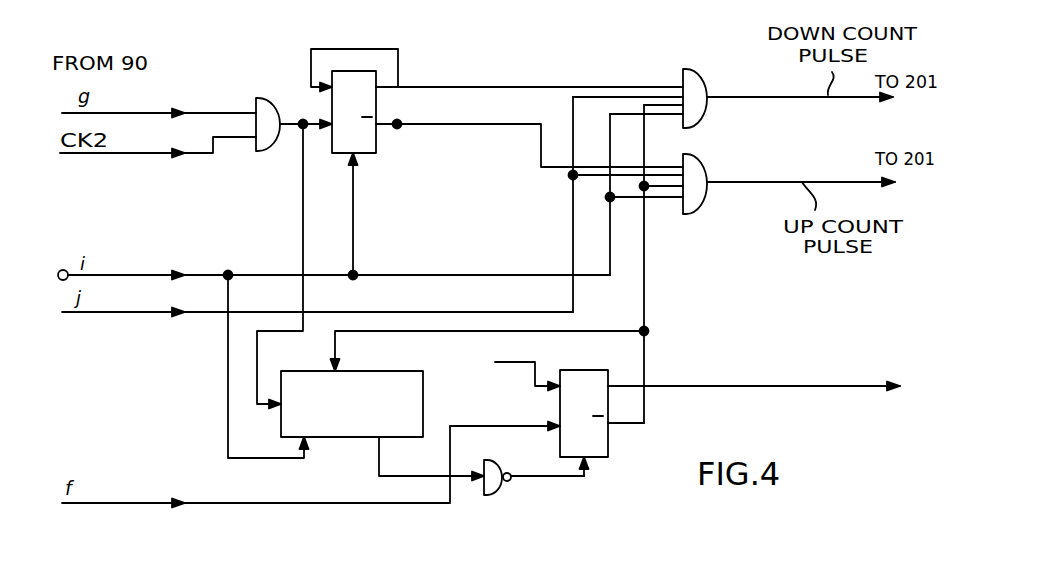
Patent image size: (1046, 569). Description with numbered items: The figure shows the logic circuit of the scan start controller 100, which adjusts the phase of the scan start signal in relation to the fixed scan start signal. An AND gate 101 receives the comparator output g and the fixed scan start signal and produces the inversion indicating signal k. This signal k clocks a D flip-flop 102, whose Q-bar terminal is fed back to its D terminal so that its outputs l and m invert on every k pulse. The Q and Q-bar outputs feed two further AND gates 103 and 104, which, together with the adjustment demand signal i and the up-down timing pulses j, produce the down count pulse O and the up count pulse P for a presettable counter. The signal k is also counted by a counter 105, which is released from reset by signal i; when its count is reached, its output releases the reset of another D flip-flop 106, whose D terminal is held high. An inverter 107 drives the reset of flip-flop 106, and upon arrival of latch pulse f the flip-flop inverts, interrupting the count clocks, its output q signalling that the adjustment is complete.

The scan start controller 100 is at (421, 538).
The AND gate 101 is at (266, 97).
The D flip-flop 102 is at (370, 153).
The AND gate 103 is at (695, 69).
The AND gate 104 is at (700, 155).
The counter 105 is at (423, 400).
The D flip-flop 106 is at (608, 447).
The inverter 107 is at (497, 492).